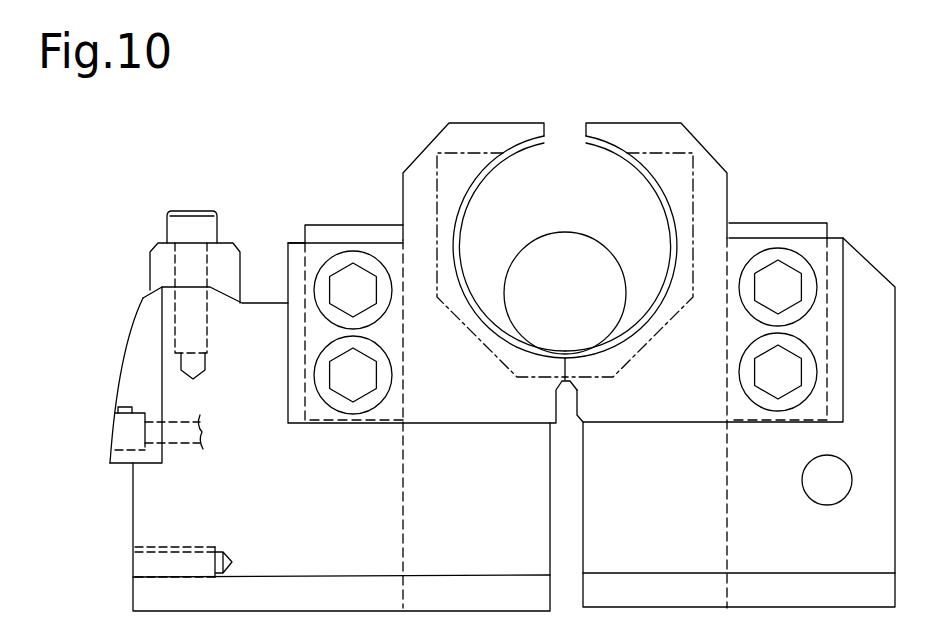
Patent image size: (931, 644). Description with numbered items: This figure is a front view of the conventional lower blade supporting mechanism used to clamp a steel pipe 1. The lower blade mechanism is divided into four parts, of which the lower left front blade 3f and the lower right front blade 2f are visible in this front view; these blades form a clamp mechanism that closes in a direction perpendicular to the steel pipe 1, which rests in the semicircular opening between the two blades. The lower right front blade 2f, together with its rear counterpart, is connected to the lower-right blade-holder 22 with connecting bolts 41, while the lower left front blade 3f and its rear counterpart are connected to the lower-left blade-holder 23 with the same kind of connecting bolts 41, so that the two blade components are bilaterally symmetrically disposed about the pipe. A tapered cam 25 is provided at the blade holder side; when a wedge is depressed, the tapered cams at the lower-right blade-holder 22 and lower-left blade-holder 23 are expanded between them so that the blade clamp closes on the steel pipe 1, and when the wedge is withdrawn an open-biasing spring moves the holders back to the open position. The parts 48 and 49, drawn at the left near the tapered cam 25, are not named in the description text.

The steel pipe 1 is at (613, 202).
The lower right front blade 2f is at (655, 123).
The lower left front blade 3f is at (512, 123).
The lower-right blade-holder 22 is at (682, 543).
The lower-left blade-holder 23 is at (303, 560).
The tapered cam 25 is at (123, 352).
The connecting bolts 41 is at (370, 307).
The stopper 48 is at (113, 412).
The clamp bolt 49 is at (158, 243).